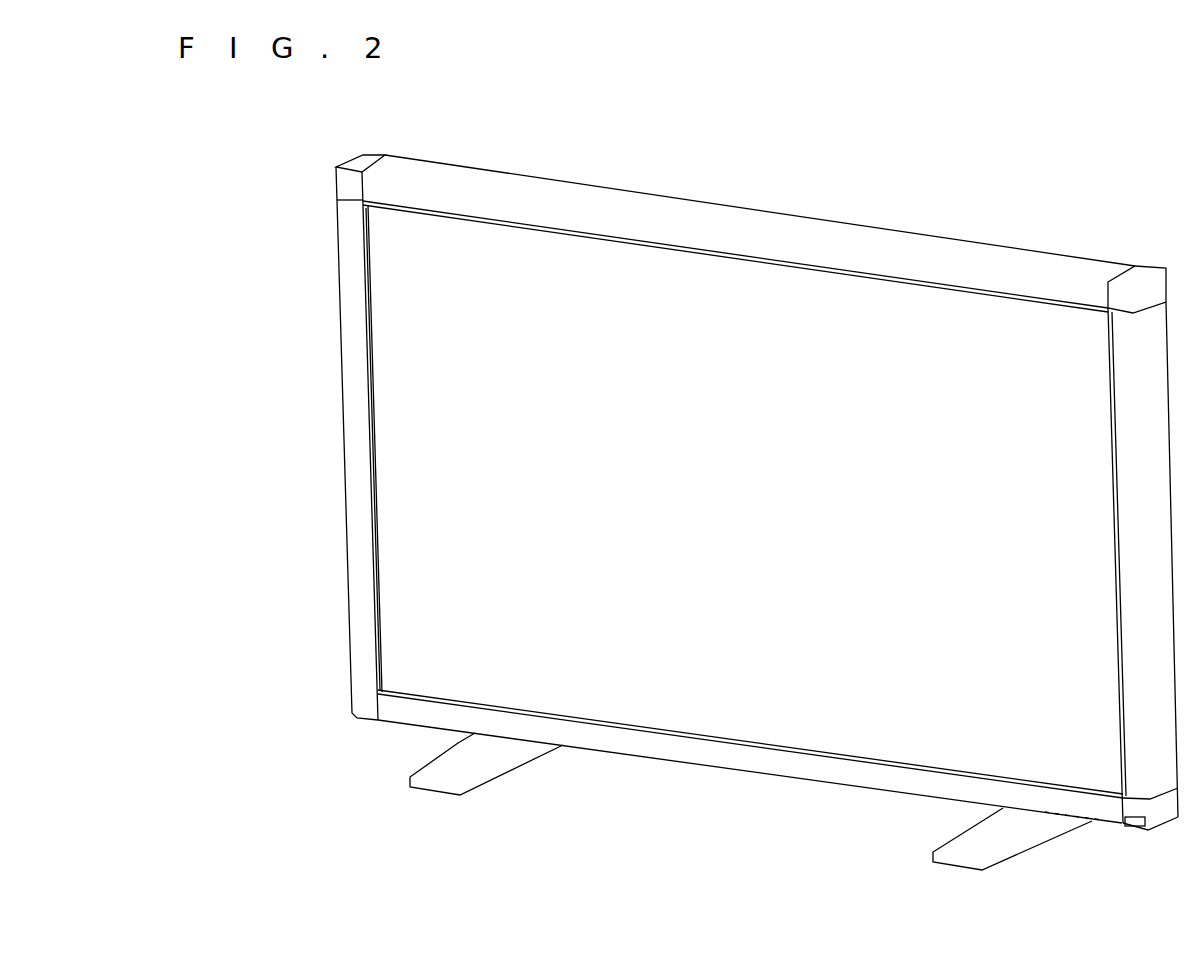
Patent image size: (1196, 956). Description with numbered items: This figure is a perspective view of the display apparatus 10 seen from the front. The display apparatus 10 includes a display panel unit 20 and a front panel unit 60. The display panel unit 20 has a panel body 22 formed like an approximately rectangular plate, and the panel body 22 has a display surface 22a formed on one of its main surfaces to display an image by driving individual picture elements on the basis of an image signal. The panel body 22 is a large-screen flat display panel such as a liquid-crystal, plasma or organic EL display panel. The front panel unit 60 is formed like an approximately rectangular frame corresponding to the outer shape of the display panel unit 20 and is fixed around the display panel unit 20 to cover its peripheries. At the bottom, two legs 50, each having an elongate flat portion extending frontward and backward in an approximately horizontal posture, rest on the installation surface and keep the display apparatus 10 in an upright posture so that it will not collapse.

The display apparatus 10 is at (952, 167).
The display panel unit 20 is at (395, 538).
The panel body 22 is at (387, 355).
The display surface 22a is at (532, 300).
The legs 50 is at (433, 777).
The front panel unit 60 is at (727, 215).